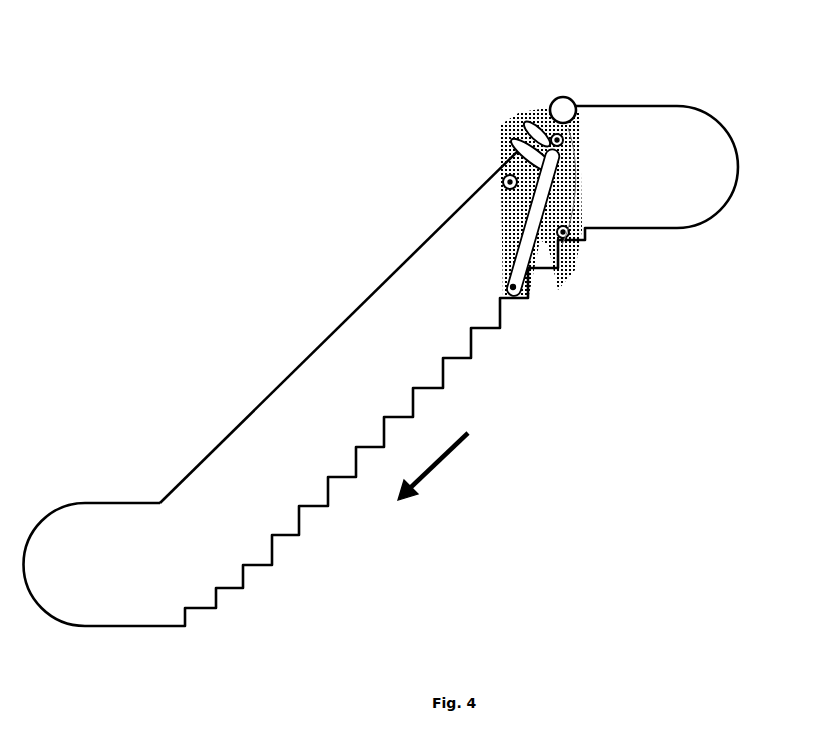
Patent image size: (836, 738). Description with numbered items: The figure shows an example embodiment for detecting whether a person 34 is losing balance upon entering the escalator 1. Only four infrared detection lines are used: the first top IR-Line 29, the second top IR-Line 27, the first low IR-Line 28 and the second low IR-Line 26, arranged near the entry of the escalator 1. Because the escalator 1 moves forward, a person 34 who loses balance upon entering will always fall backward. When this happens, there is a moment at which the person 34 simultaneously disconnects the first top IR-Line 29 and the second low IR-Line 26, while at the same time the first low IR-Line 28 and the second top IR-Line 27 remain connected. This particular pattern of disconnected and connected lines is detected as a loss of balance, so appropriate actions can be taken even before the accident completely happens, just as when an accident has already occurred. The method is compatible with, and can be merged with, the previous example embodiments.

The escalator 1 is at (740, 128).
The second low IR-Line 26 is at (519, 302).
The second top IR-Line 27 is at (492, 171).
The first low IR-Line 28 is at (573, 243).
The first top IR-Line 29 is at (552, 131).
The person 34 is at (565, 93).